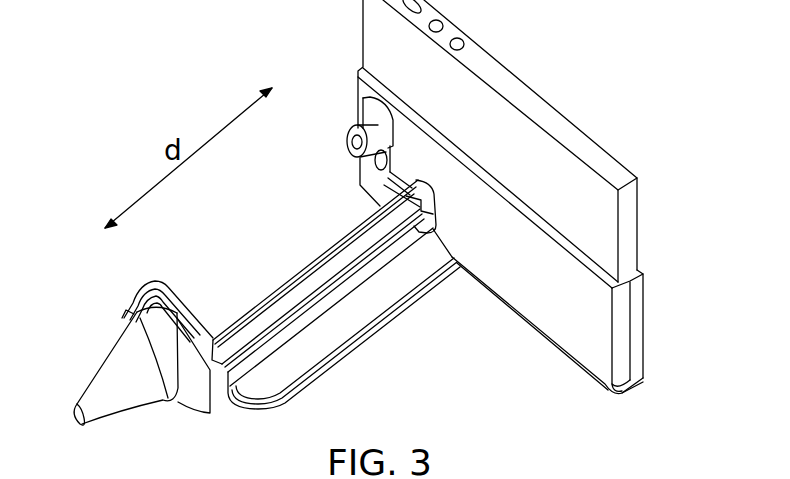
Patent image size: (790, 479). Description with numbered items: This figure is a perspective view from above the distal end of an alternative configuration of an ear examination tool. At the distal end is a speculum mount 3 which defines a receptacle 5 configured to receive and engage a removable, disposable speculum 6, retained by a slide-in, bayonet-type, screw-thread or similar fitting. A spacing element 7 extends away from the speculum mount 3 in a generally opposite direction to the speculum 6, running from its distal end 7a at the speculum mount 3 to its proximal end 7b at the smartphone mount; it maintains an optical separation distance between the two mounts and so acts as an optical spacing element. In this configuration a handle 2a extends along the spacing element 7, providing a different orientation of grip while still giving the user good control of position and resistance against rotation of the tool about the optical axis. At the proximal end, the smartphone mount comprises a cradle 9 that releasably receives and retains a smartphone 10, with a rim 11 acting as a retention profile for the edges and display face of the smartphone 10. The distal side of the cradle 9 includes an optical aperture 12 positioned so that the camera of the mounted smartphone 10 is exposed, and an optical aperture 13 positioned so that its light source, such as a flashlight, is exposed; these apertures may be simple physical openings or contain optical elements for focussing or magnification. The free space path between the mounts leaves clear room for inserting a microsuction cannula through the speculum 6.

The handle 2a is at (285, 375).
The speculum mount 3 is at (153, 281).
The receptacle 5 is at (124, 316).
The speculum 6 is at (123, 367).
The spacing element 7 is at (328, 277).
The distal end of spacing element 7a is at (214, 338).
The proximal end of spacing element 7b is at (360, 216).
The cradle 9 is at (562, 320).
The smartphone 10 is at (592, 188).
The rim 11 is at (625, 385).
The optical aperture 12 is at (376, 168).
The optical aperture 13 is at (348, 146).